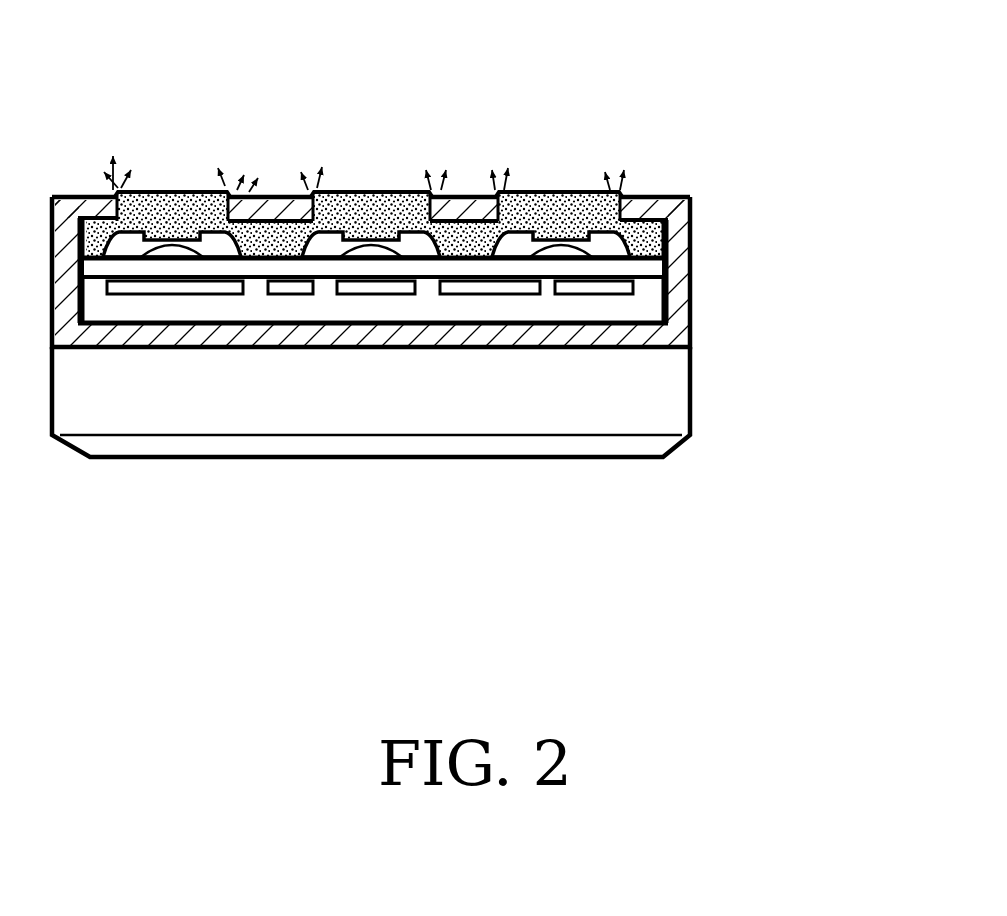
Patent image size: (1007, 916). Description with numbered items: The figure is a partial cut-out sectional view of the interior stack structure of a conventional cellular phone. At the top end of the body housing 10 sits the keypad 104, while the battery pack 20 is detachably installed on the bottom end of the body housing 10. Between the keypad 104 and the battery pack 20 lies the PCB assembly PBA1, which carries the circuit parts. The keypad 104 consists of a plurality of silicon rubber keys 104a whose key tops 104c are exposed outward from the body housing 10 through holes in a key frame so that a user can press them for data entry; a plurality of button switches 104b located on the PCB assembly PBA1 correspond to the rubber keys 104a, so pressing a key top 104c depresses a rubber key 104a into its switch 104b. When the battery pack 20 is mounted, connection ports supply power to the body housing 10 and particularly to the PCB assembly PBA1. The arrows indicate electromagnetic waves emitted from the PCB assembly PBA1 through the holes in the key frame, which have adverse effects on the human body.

The body housing 10 is at (704, 236).
The battery pack 20 is at (605, 405).
The keypad 104 is at (550, 176).
The silicon rubber keys 104a is at (187, 192).
The button switches 104b is at (627, 200).
The key tops 104c is at (367, 192).
The PCB assembly PBA1 is at (656, 295).